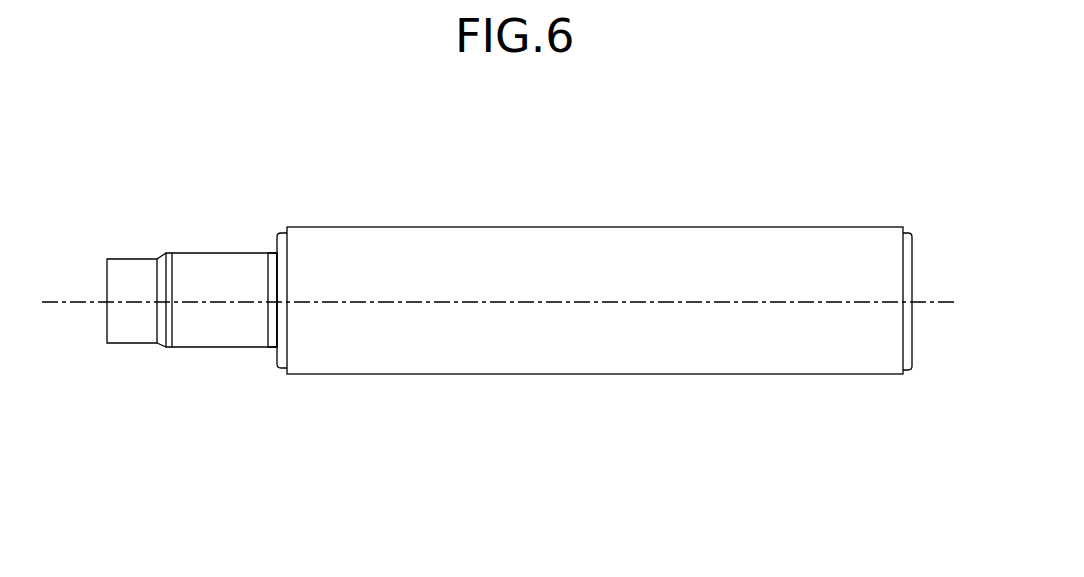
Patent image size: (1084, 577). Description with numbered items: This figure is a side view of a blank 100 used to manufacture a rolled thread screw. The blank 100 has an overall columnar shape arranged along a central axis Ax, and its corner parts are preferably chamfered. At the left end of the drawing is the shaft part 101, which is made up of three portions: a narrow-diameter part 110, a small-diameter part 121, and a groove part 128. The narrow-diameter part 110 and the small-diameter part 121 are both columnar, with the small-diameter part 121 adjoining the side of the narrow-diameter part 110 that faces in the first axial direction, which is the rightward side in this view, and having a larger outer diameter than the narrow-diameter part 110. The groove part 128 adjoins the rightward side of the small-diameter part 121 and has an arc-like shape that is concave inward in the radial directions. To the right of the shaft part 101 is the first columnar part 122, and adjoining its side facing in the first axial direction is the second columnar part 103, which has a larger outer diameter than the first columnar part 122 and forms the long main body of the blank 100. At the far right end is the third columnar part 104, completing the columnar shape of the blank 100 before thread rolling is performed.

The blank 100 is at (383, 202).
The shaft part 101 is at (263, 430).
The second columnar part 103 is at (385, 360).
The third columnar part 104 is at (908, 333).
The narrow-diameter part 110 is at (128, 331).
The small-diameter part 121 is at (203, 337).
The first columnar part 122 is at (276, 224).
The groove part 128 is at (276, 322).
The axis Ax is at (72, 297).